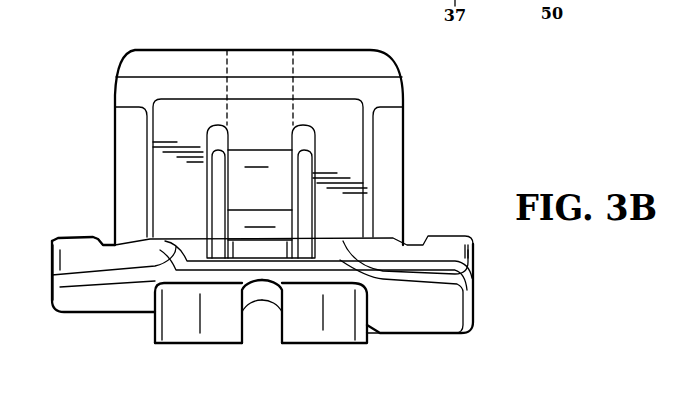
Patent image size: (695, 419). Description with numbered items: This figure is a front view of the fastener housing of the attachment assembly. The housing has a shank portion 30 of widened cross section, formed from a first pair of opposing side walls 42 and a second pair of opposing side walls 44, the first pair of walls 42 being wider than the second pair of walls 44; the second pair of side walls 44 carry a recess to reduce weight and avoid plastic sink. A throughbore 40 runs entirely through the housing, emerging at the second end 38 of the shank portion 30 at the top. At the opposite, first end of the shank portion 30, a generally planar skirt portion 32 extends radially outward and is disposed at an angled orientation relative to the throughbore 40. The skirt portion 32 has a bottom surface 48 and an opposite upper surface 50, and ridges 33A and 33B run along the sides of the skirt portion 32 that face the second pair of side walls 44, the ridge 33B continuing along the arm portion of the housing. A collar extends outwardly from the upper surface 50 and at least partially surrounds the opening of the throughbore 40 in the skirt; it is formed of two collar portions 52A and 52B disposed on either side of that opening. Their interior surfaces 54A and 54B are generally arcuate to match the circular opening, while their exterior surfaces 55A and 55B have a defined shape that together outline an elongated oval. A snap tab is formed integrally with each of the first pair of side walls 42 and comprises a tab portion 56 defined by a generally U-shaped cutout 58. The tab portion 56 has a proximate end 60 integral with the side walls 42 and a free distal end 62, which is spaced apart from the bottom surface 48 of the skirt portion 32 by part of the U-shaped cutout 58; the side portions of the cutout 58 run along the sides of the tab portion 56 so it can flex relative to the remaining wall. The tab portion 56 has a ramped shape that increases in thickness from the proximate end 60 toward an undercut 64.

The shank portion 30 is at (357, 127).
The skirt portion 32 is at (68, 257).
The ridge 33A is at (65, 238).
The ridge 33B is at (443, 233).
The second end 38 is at (186, 48).
The throughbore 40 is at (290, 91).
The first pair of opposing side walls 42 is at (405, 190).
The second pair of opposing side walls 44 is at (115, 163).
The bottom surface 48 is at (108, 245).
The upper surface 50 is at (108, 297).
The collar portion 52A is at (200, 340).
The collar portion 52B is at (305, 328).
The interior surface 54A is at (246, 336).
The interior surface 54B is at (280, 336).
The exterior surface 55A is at (155, 330).
The exterior surface 55B is at (370, 323).
The tab portion 56 is at (280, 188).
The U-shaped cutout 58 is at (333, 135).
The proximate end 60 is at (262, 125).
The free distal end 62 is at (295, 245).
The undercut 64 is at (283, 228).